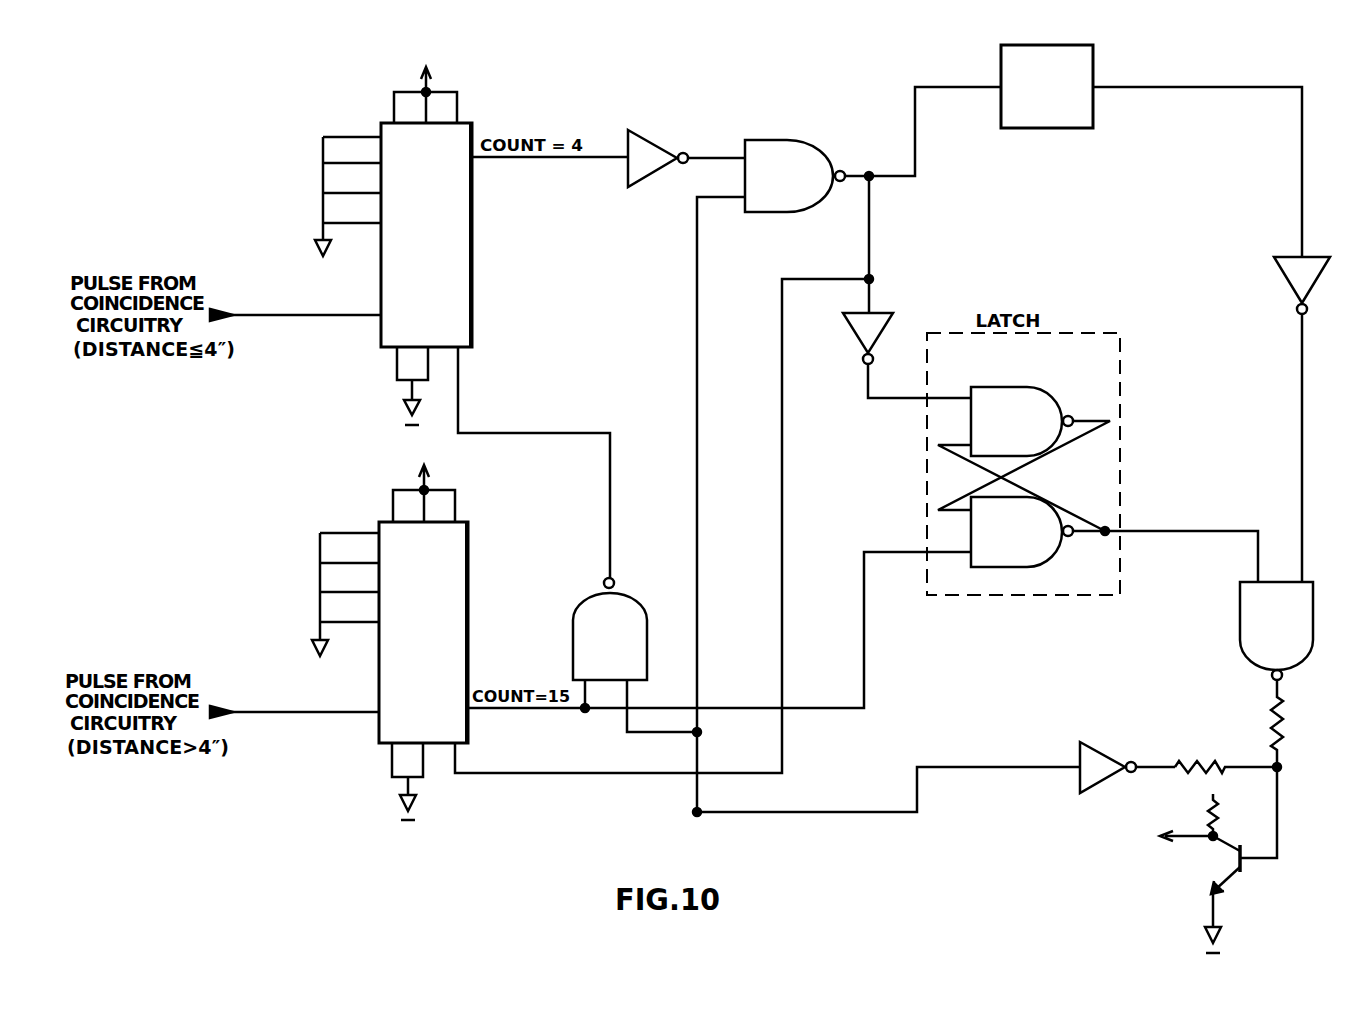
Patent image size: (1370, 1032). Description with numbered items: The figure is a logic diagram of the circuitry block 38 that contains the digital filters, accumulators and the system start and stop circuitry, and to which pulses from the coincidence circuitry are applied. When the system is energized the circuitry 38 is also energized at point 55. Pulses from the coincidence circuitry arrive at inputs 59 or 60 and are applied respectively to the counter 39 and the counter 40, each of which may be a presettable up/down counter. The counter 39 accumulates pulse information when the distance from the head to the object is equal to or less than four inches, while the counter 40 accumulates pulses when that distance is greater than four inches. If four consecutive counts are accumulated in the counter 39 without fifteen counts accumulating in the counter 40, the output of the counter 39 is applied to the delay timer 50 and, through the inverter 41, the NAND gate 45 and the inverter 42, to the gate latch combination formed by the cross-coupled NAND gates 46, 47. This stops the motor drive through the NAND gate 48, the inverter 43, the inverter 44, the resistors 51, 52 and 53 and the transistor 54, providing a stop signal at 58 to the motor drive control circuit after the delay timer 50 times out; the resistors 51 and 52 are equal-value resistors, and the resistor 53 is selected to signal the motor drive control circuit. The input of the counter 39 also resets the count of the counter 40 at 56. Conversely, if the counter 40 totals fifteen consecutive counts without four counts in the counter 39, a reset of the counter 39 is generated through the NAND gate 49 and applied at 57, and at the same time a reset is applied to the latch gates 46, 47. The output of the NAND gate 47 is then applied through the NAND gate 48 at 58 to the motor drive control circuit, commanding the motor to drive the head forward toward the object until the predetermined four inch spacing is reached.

The circuitry block 38 is at (355, 768).
The counter 39 is at (455, 232).
The counter 40 is at (450, 607).
The inverter 41 is at (645, 152).
The inverter 42 is at (858, 324).
The inverter 43 is at (1290, 270).
The inverter 44 is at (1093, 758).
The NAND gate 45 is at (790, 158).
The NAND gate 46 is at (1022, 395).
The NAND gate 47 is at (1032, 552).
The NAND gate 48 is at (1263, 613).
The NAND gate 49 is at (632, 638).
The delay timer 50 is at (1033, 130).
The resistor 51 is at (1268, 712).
The resistor 52 is at (1195, 762).
The resistor 53 is at (1218, 822).
The transistor 54 is at (1232, 880).
The energizing point 55 is at (697, 812).
The reset line 56 is at (458, 748).
The reset line 57 is at (460, 350).
The output signal point 58 is at (1210, 840).
The pulse input 59 is at (305, 318).
The pulse input 60 is at (275, 711).